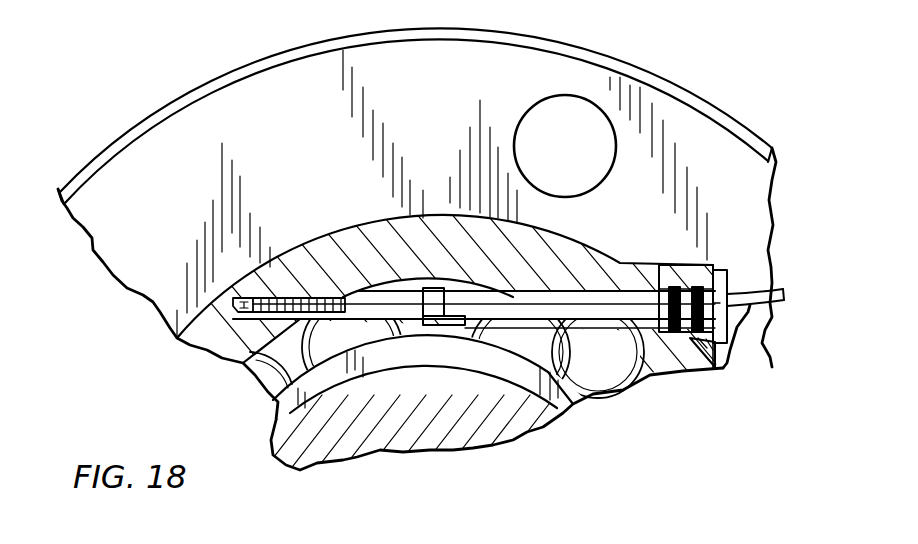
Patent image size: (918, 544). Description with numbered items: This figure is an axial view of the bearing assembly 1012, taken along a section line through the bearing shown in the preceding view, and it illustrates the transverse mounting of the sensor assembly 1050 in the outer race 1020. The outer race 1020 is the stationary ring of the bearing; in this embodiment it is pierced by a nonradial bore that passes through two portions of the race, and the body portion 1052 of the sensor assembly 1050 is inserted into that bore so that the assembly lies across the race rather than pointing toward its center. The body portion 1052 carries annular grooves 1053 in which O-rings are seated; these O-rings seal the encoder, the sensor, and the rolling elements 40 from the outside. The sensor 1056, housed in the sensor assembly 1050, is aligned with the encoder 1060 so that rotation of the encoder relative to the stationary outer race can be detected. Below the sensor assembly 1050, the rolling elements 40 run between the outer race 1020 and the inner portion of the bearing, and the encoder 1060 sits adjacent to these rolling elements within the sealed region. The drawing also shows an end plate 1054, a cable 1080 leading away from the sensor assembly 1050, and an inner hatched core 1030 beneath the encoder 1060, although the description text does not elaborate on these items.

The bearing assembly 1012 is at (684, 60).
The outer race 1020 is at (276, 72).
The body portion 1052 is at (382, 298).
The sensor 1056 is at (440, 318).
The sensor assembly 1050 is at (507, 282).
The annular grooves 1053 is at (672, 290).
The end plate 1054 is at (730, 283).
The cable 1080 is at (762, 341).
The inner core 1030 is at (530, 432).
The encoder 1060 is at (285, 412).
The rolling elements 40 is at (272, 372).